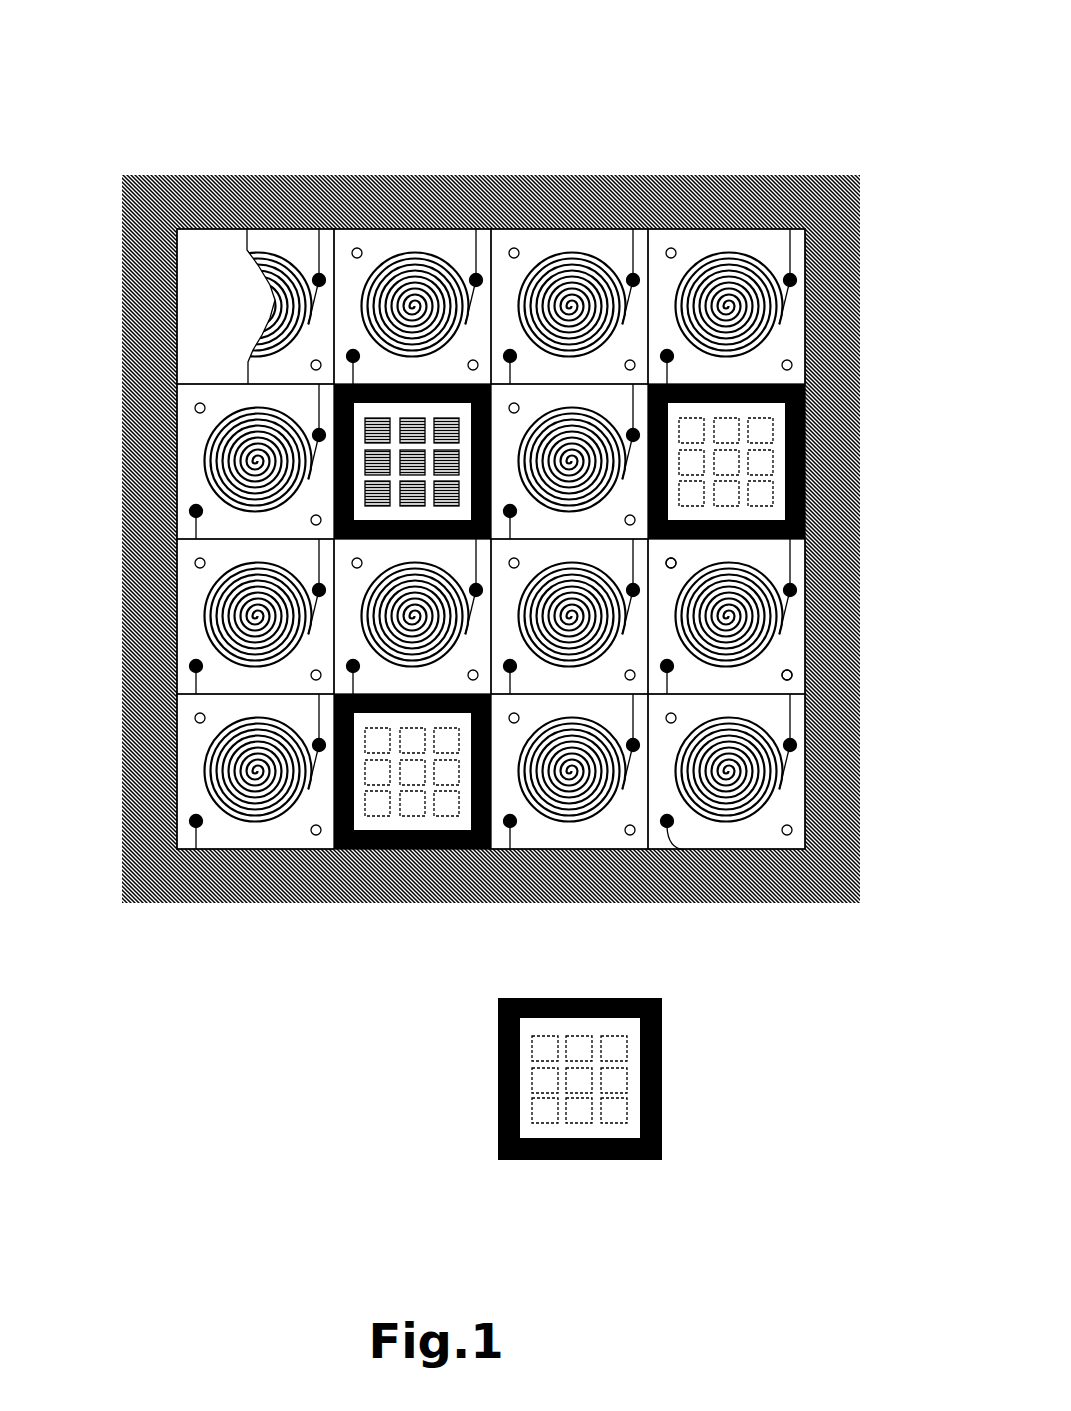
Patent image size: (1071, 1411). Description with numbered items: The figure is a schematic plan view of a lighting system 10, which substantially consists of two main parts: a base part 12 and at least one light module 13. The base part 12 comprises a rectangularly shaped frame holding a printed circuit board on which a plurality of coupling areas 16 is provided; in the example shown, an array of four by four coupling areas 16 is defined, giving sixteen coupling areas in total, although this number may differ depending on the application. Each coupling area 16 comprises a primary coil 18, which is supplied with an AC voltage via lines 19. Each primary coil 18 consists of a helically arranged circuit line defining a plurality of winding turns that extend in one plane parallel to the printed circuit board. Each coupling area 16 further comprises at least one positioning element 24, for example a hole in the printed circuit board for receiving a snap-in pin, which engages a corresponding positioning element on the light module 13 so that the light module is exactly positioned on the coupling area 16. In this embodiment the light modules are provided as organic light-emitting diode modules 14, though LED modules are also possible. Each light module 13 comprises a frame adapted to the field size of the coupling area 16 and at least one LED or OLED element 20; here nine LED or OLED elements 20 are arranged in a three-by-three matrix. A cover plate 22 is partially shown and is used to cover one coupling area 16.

The lighting system 10 is at (190, 97).
The base part 12 is at (770, 175).
The light module 13 is at (617, 1079).
The organic light-emitting diode module 14 is at (774, 411).
The coupling area 16 is at (772, 835).
The primary coil 18 is at (722, 824).
The lines 19 is at (806, 718).
The LED or OLED element 20 is at (527, 1113).
The cover plate 22 is at (190, 318).
The positioning element 24 is at (676, 560).